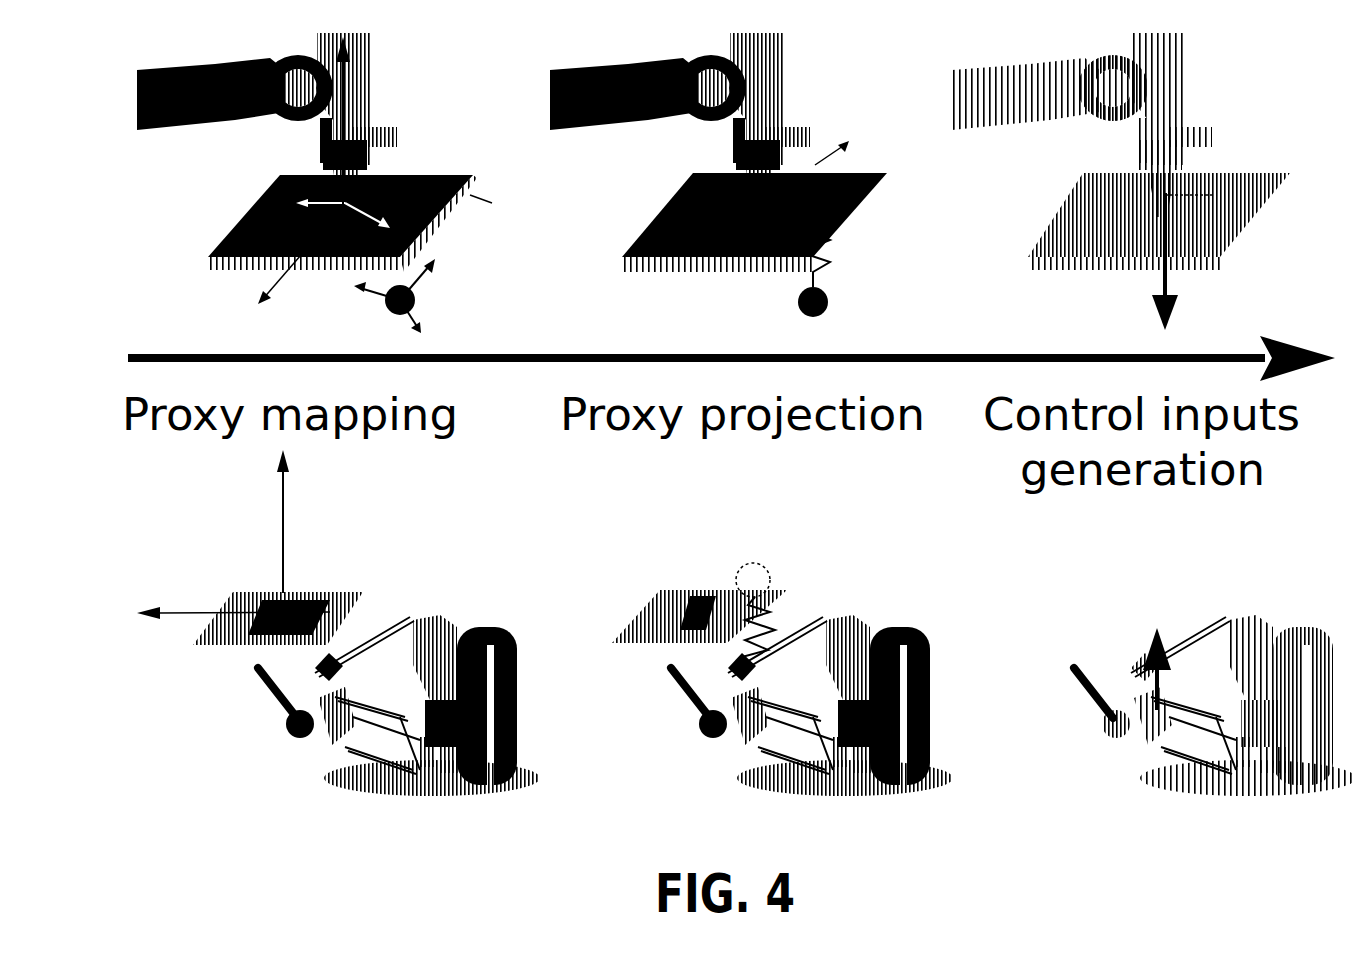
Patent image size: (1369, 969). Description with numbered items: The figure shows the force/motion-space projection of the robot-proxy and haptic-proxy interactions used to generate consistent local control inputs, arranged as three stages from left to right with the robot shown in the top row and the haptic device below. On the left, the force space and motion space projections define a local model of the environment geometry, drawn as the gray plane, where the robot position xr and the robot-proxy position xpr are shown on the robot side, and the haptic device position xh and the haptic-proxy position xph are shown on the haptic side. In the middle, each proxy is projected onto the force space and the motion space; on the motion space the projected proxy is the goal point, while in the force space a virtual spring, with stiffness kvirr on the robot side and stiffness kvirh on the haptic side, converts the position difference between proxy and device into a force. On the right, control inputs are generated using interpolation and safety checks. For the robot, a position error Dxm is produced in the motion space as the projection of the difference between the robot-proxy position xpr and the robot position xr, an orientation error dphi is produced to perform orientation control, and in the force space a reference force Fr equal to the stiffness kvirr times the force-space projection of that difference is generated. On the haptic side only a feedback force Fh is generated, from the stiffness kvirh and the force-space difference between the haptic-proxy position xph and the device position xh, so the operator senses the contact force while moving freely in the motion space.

The robot position xr is at (342, 223).
The robot-proxy position xpr is at (424, 296).
The virtual spring stiffness on the robot side kvirr is at (848, 256).
The orientation error dphi is at (1159, 221).
The position error Dxm is at (1221, 193).
The reference force Fr is at (1194, 268).
The haptic device position xh is at (284, 722).
The haptic-proxy position xph is at (278, 589).
The virtual spring stiffness on the haptic side kvirh is at (716, 599).
The feedback force Fh is at (1123, 657).